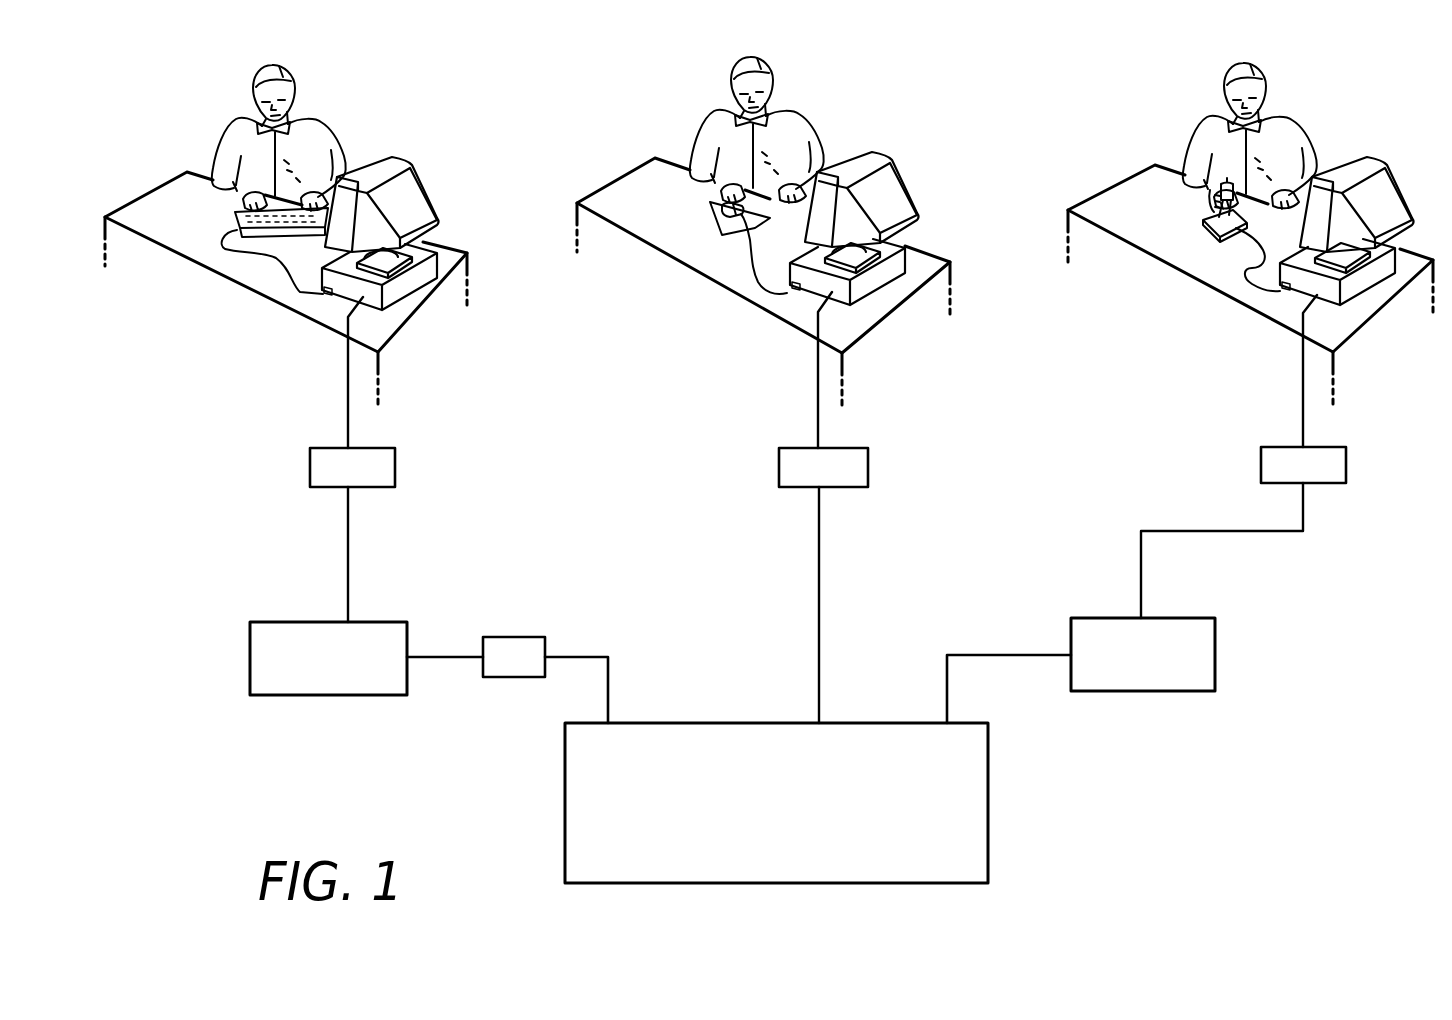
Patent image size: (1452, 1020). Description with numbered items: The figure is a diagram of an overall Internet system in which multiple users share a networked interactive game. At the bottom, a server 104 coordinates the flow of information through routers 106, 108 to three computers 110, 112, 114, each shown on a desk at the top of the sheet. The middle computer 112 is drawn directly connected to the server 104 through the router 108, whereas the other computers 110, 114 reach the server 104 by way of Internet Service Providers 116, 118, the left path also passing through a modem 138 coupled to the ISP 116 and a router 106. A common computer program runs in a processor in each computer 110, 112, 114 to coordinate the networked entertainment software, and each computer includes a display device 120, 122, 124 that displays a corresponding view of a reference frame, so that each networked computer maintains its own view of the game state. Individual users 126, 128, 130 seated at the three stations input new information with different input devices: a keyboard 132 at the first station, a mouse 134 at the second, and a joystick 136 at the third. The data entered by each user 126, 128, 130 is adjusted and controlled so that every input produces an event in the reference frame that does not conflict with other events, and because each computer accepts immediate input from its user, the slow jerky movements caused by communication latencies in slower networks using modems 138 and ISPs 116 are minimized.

The server 104 is at (991, 828).
The router 106 is at (514, 641).
The router 108 is at (851, 480).
The computer 110 is at (397, 295).
The computer 112 is at (868, 296).
The computer 114 is at (1345, 311).
The Internet Service Provider 116 is at (272, 626).
The Internet Service Provider 118 is at (1184, 621).
The display device 120 is at (408, 186).
The display device 122 is at (886, 184).
The display device 124 is at (1359, 186).
The user 126 is at (243, 125).
The user 128 is at (715, 130).
The user 130 is at (1221, 136).
The keyboard 132 is at (234, 212).
The mouse 134 is at (738, 211).
The joystick 136 is at (1210, 214).
The modem 138 is at (395, 472).